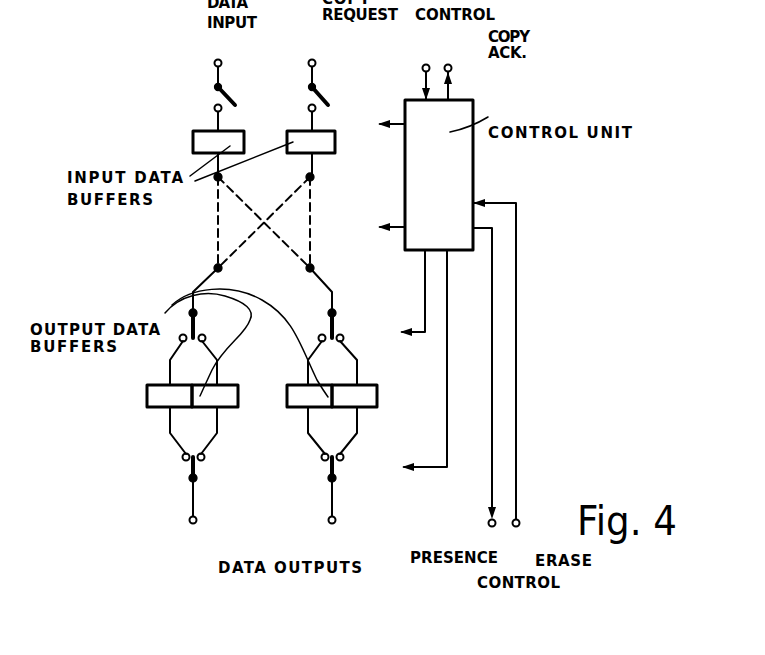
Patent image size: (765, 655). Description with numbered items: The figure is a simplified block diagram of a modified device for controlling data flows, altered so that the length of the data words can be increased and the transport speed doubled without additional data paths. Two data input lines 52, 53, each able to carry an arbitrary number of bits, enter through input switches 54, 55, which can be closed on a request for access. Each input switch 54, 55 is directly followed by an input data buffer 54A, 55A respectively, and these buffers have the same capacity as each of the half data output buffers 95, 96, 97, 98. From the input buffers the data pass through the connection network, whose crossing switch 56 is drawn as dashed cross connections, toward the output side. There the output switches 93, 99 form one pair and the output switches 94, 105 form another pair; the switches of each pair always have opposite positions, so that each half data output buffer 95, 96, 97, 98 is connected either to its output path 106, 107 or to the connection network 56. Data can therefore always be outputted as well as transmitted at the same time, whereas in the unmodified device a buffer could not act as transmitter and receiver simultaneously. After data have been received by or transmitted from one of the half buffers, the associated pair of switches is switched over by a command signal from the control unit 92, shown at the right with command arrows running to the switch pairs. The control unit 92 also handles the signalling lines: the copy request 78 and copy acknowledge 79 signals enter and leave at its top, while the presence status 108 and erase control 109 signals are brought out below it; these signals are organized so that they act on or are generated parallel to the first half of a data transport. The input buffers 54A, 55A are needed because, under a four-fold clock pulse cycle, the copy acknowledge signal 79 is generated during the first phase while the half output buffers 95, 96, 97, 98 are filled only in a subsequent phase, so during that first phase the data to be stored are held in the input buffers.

The data input line 52 is at (219, 60).
The data input line 53 is at (315, 60).
The input switch 54 is at (241, 93).
The input data buffer 54A is at (193, 142).
The input switch 55 is at (334, 93).
The input data buffer 55A is at (335, 142).
The crossing switch 56 is at (264, 224).
The copy request signal 78 is at (388, 28).
The copy acknowledge signal 79 is at (483, 43).
The control unit 92 is at (443, 177).
The output switch 93 is at (197, 327).
The output switch 94 is at (336, 327).
The half data output buffer 95 is at (167, 396).
The half data output buffer 96 is at (218, 396).
The half data output buffer 97 is at (306, 396).
The half data output buffer 98 is at (360, 396).
The output switch 99 is at (200, 469).
The output switch 105 is at (337, 472).
The output path 106 is at (227, 553).
The output path 107 is at (292, 553).
The presence status signal 108 is at (482, 389).
The erase control signal 109 is at (511, 375).